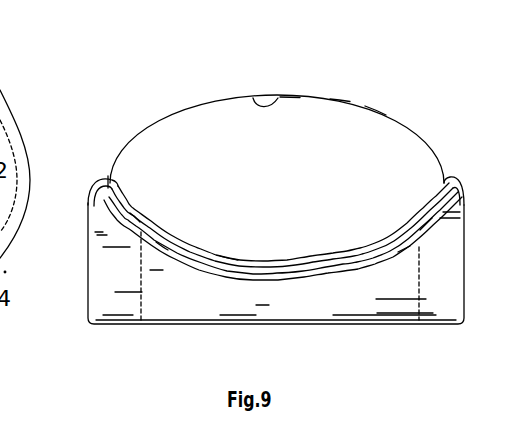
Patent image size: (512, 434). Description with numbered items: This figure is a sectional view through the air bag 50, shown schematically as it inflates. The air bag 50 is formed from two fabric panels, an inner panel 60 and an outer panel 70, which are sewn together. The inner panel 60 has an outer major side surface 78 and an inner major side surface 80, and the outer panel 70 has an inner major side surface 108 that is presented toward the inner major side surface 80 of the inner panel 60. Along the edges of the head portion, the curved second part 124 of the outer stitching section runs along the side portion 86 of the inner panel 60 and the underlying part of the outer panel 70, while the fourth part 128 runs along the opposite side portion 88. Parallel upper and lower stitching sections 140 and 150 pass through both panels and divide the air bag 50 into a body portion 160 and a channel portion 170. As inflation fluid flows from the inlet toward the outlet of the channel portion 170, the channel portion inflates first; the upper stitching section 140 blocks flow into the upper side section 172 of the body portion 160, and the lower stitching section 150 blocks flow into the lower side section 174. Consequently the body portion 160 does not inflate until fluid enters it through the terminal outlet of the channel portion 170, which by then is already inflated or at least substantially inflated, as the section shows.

The air bag 50 is at (176, 100).
The inner panel 60 is at (378, 112).
The outer panel 70 is at (393, 235).
The outer major side surface 78 is at (289, 96).
The inner major side surface 80 is at (254, 97).
The side portion 86 is at (138, 226).
The side portion 88 is at (418, 247).
The inner major side surface 108 is at (228, 258).
The curved second part of the outer stitching section 124 is at (163, 247).
The fourth part of the outer stitching section 128 is at (403, 250).
The upper stitching section 140 is at (448, 177).
The lower stitching section 150 is at (107, 176).
The body portion 160 is at (81, 230).
The channel portion 170 is at (340, 98).
The upper side section 172 is at (427, 235).
The lower side section 174 is at (183, 277).